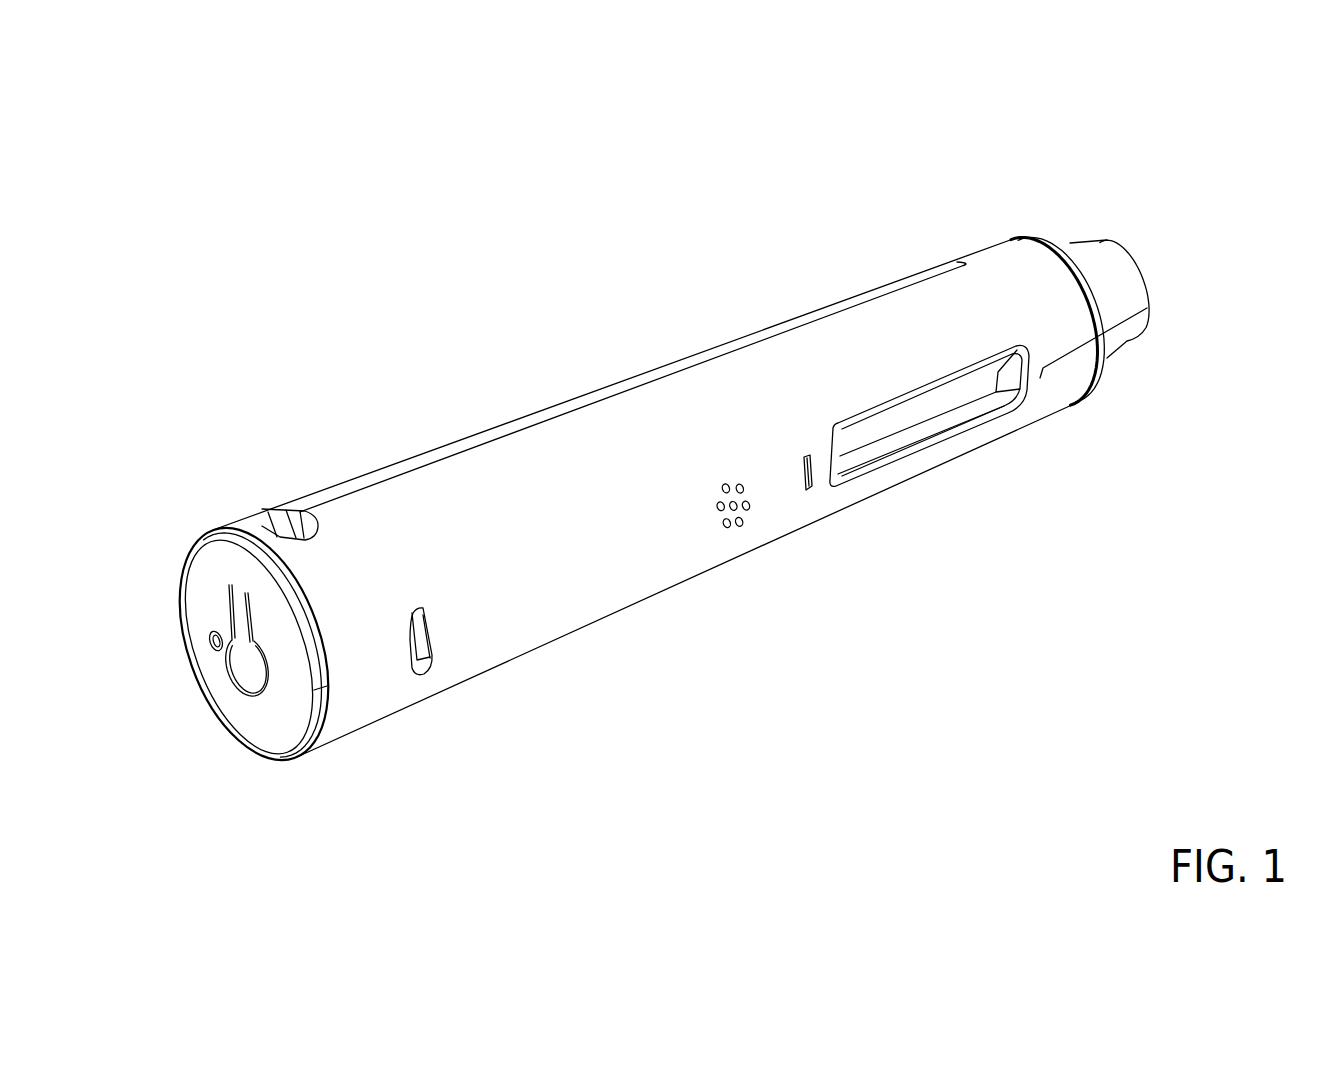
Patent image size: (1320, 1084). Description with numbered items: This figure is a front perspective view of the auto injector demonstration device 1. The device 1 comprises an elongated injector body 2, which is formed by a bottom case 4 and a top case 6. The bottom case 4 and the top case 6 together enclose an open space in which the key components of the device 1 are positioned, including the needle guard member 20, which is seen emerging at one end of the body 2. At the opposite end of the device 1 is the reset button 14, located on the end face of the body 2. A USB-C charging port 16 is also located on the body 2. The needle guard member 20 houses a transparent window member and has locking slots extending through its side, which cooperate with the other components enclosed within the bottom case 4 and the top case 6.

The auto injector demonstration device 1 is at (372, 188).
The elongated injector body 2 is at (463, 450).
The bottom case 4 is at (507, 632).
The top case 6 is at (997, 283).
The reset button 14 is at (247, 665).
The USB-C charging port 16 is at (280, 504).
The needle guard member 20 is at (1080, 272).